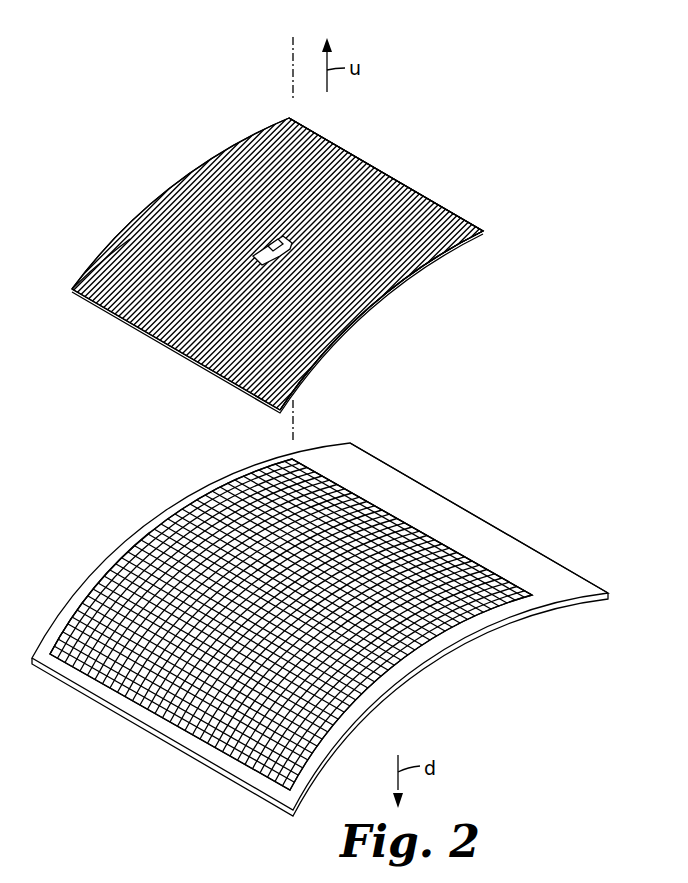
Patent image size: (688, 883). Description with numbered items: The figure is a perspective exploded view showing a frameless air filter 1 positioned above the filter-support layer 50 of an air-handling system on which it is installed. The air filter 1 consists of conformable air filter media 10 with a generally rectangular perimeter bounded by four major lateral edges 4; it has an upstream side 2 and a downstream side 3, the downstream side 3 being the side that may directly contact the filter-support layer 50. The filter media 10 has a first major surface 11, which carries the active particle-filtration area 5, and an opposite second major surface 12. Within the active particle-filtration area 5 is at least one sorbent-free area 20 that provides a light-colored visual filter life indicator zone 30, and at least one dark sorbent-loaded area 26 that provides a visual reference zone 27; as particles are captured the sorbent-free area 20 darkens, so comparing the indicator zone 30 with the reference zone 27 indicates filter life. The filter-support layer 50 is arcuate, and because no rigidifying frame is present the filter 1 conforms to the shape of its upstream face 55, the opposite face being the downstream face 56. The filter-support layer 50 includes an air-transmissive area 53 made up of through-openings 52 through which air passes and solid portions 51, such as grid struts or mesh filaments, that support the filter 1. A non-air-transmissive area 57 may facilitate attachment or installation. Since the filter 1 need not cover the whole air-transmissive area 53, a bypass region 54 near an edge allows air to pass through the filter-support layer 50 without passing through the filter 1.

The air filter 1 is at (480, 45).
The upstream side 2 is at (182, 139).
The downstream side 3 is at (372, 312).
The major lateral edges 4 is at (104, 248).
The active particle-filtration area 5 is at (157, 242).
The air filter media 10 is at (459, 212).
The first major surface 11 is at (249, 142).
The second major surface 12 is at (404, 281).
The sorbent-free area 20 is at (274, 244).
The sorbent-loaded area 26 is at (380, 189).
The visual reference zone 27 is at (413, 213).
The visual filter life indicator zone 30 is at (266, 245).
The filter-support layer 50 is at (532, 500).
The solid portions 51 is at (167, 702).
The through-openings 52 is at (250, 755).
The air-transmissive area 53 is at (249, 586).
The bypass region 54 is at (102, 589).
The upstream face 55 is at (104, 522).
The downstream face 56 is at (379, 640).
The non-air-transmissive area 57 is at (454, 512).